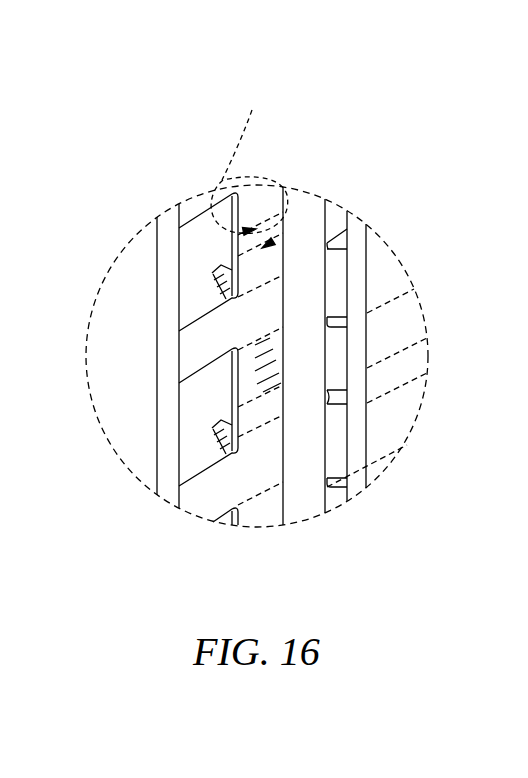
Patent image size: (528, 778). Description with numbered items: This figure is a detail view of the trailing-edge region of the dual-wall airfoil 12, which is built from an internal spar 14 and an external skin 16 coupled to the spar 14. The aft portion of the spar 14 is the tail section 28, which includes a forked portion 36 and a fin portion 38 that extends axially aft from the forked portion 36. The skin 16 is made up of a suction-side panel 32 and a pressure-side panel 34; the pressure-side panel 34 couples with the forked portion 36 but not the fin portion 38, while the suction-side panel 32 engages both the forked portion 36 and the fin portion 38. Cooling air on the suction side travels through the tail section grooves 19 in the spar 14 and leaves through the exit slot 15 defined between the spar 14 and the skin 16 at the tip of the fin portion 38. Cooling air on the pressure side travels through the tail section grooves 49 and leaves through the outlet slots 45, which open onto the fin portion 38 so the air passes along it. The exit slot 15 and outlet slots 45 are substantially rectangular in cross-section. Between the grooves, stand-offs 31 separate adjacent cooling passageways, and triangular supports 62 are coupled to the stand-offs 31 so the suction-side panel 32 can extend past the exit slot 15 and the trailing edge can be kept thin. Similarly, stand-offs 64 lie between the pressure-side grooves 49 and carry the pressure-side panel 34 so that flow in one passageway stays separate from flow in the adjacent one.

The airfoil 12 is at (432, 136).
The spar 14 is at (297, 172).
The exit slot 15 is at (201, 255).
The skin 16 is at (382, 257).
The tail section grooves 19 is at (249, 161).
The tail section 28 is at (272, 460).
The stand-offs 31 is at (290, 190).
The suction-side panel 32 is at (150, 292).
The pressure-side panel 34 is at (356, 225).
The forked portion 36 is at (315, 225).
The fin portion 38 is at (257, 480).
The outlet slots 45 is at (328, 380).
The tail section grooves 49 is at (393, 338).
The triangular supports 62 is at (194, 348).
The stand-offs 64 is at (352, 277).